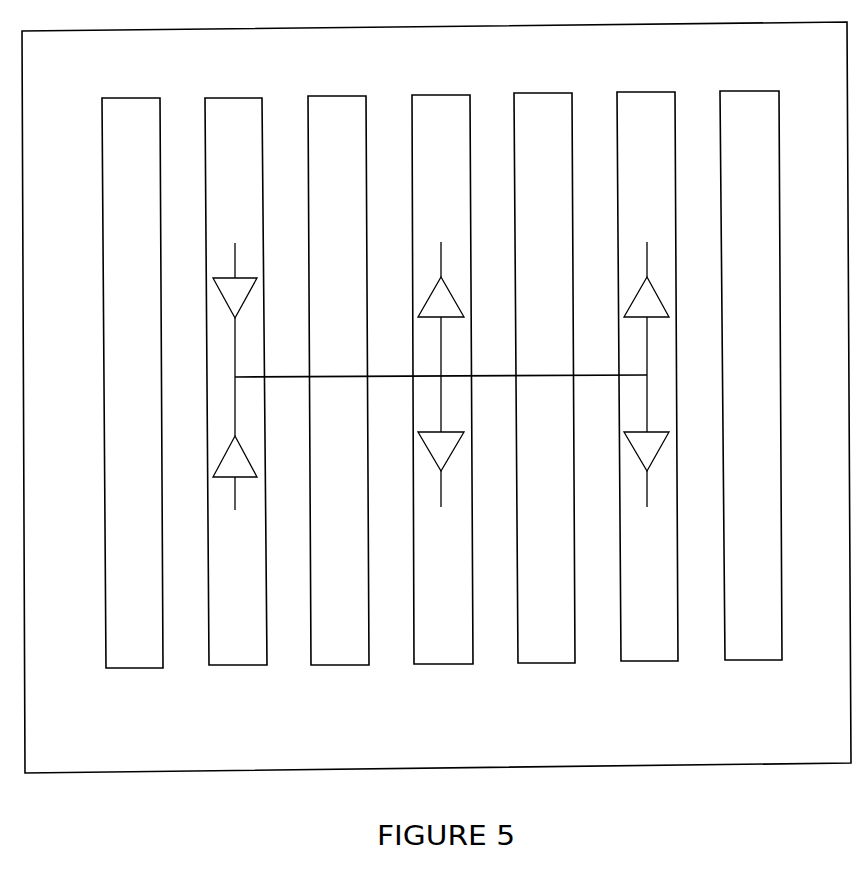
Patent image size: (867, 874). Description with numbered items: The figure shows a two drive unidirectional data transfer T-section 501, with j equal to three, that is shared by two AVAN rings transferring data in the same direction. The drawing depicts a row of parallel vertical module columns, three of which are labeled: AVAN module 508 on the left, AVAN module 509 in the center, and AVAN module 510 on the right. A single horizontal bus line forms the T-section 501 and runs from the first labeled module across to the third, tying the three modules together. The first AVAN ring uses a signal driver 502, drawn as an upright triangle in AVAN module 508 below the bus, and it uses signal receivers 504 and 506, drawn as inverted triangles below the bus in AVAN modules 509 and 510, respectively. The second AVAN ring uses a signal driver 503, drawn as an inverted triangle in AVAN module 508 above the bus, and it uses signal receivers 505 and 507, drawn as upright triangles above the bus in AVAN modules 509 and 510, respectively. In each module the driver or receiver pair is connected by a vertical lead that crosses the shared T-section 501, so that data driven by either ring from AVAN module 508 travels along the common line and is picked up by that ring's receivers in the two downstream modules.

The T-section 501 is at (391, 376).
The signal driver 502 is at (222, 459).
The signal driver 503 is at (222, 296).
The signal receiver 504 is at (457, 449).
The signal receiver 505 is at (453, 298).
The signal receiver 506 is at (662, 449).
The signal receiver 507 is at (660, 298).
The AVAN module 508 is at (235, 665).
The AVAN module 509 is at (443, 664).
The AVAN module 510 is at (648, 661).